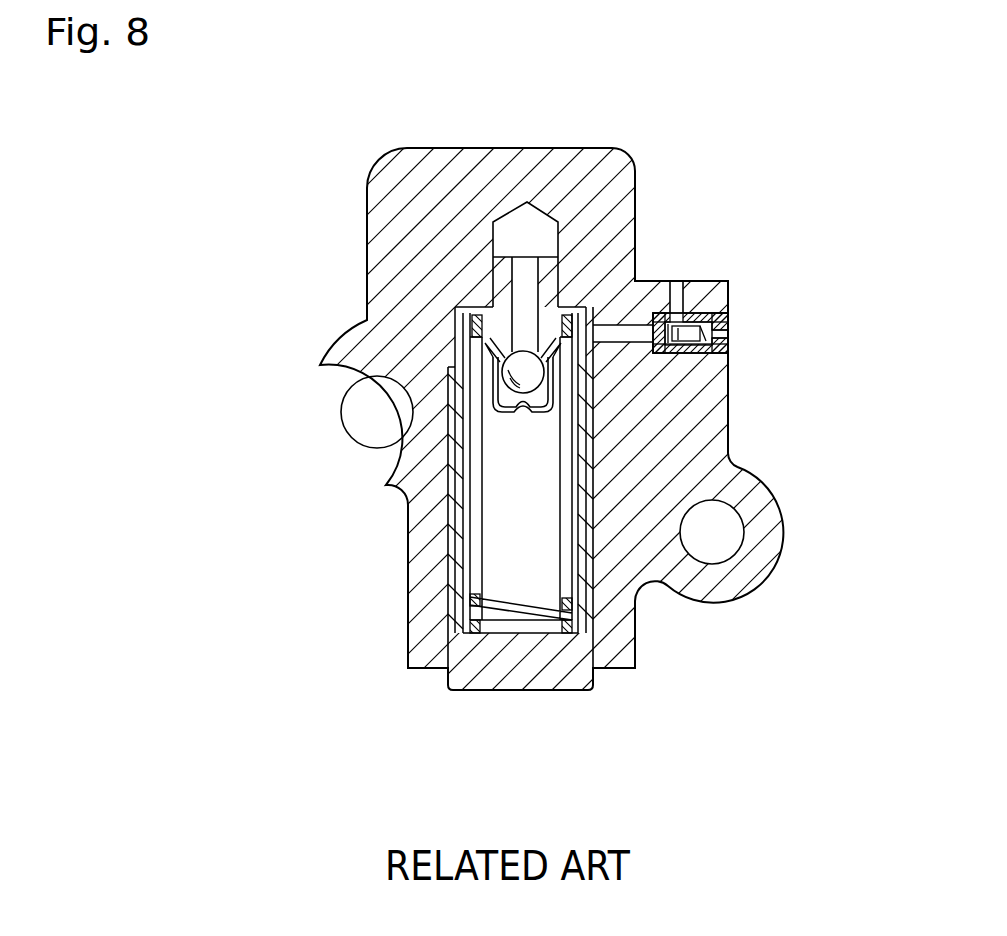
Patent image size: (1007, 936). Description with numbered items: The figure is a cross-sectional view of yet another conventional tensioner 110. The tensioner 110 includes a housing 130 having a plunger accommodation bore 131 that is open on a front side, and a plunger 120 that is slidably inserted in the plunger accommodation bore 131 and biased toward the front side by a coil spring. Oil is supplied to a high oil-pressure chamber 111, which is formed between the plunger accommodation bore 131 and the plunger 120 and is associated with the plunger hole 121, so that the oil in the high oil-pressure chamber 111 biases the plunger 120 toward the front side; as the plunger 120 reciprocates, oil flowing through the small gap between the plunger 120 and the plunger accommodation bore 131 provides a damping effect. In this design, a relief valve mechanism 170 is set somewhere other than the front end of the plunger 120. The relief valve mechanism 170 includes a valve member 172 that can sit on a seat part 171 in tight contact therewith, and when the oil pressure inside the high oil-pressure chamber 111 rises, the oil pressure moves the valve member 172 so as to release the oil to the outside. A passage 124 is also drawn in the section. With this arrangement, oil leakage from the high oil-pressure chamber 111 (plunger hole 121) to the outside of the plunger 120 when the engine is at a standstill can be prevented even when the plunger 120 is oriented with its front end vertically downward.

The tensioner 110 is at (269, 168).
The high oil-pressure chamber 111 is at (545, 513).
The plunger 120 is at (458, 670).
The plunger hole 121 is at (473, 512).
The oil supply passage 124 is at (690, 288).
The housing 130 is at (606, 198).
The plunger accommodation bore 131 is at (593, 542).
The relief valve mechanism 170 is at (748, 337).
The seat part 171 is at (649, 300).
The valve member 172 is at (683, 356).